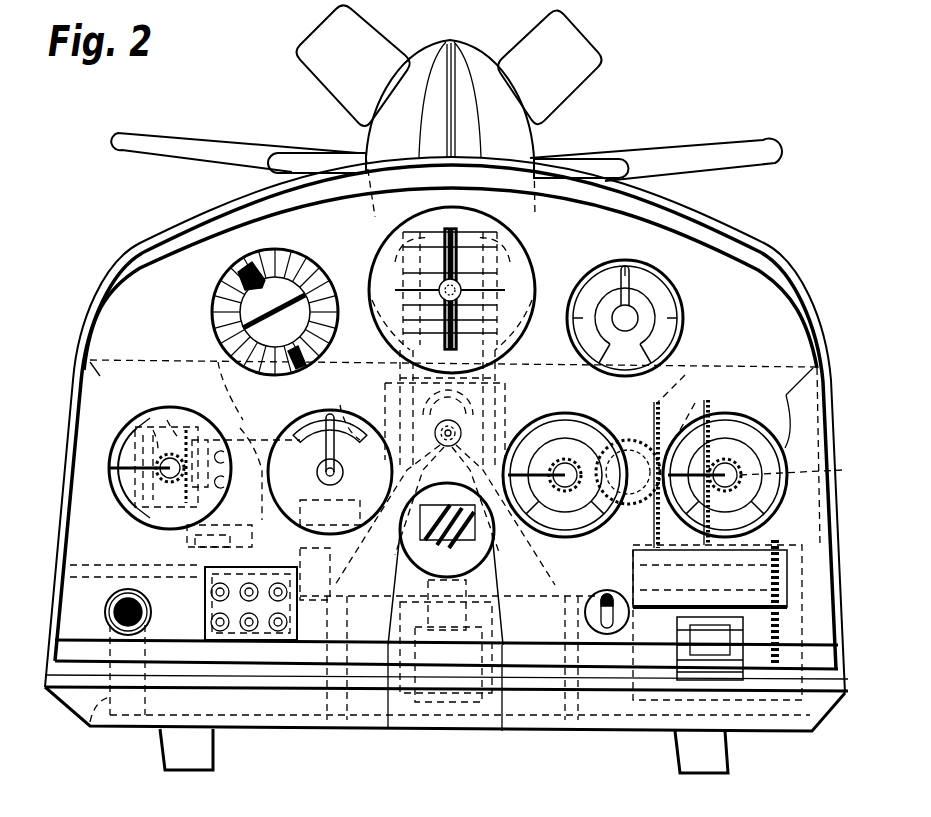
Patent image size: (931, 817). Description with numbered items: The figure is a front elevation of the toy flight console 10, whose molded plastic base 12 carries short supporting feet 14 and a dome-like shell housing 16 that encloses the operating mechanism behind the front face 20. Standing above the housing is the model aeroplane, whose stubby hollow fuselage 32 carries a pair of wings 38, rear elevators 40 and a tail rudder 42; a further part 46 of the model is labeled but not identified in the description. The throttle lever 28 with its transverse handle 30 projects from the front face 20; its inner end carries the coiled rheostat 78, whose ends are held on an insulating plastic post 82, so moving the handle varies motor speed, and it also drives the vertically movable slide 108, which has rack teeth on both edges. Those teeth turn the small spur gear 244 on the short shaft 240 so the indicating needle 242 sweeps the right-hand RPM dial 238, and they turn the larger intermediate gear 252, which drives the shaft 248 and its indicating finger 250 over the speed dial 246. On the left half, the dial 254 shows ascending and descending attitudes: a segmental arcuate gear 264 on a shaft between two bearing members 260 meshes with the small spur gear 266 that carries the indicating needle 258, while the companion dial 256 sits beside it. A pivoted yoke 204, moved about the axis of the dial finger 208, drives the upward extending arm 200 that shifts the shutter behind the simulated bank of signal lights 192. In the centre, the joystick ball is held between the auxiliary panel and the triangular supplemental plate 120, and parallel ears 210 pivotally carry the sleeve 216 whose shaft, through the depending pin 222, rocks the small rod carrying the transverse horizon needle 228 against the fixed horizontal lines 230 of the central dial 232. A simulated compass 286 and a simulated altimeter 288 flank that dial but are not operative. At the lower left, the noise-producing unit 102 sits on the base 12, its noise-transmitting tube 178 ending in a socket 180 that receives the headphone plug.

The console 10 is at (795, 270).
The base 12 is at (793, 735).
The supporting feet 14 is at (214, 742).
The housing 16 is at (182, 221).
The front face 20 is at (143, 303).
The throttle lever 28 is at (732, 680).
The transverse handle 30 is at (760, 538).
The fuselage 32 is at (425, 58).
The wings 38 is at (238, 140).
The rear elevators 40 is at (313, 153).
The tail rudder 42 is at (467, 48).
The propeller blade 46 is at (586, 36).
The coiled rheostat 78 is at (793, 591).
The plastic post 82 is at (800, 624).
The noise-producing unit 102 is at (85, 728).
The vertically movable slide 108 is at (695, 403).
The supplemental plate 120 is at (507, 408).
The noise-transmitting tube 178 is at (117, 598).
The socket 180 is at (143, 599).
The simulated bank of signal lights 192 is at (218, 640).
The arm 200 is at (316, 570).
The pivoted yoke 204 is at (240, 428).
The dial finger 208 is at (329, 394).
The ears 210 is at (373, 265).
The sleeve 216 is at (508, 362).
The depending pin 222 is at (410, 414).
The horizon bar 228 is at (505, 266).
The fixed horizontal lines 230 is at (422, 219).
The dial 232 is at (483, 213).
The right-hand dial 238 is at (785, 448).
The short shaft 240 is at (736, 421).
The indicating needle 242 is at (662, 526).
The small spur gear 244 is at (842, 470).
The dial 246 is at (586, 433).
The shaft 248 is at (560, 416).
The indicating finger 250 is at (598, 592).
The intermediate gear 252 is at (685, 375).
The dial 254 is at (153, 430).
The dial 256 is at (340, 405).
The indicating needle 258 is at (126, 512).
The bearing members 260 is at (142, 425).
The segmental arcuate gear 264 is at (225, 364).
The small spur gear 266 is at (167, 420).
The simulated compass 286 is at (270, 262).
The simulated altimeter 288 is at (673, 268).